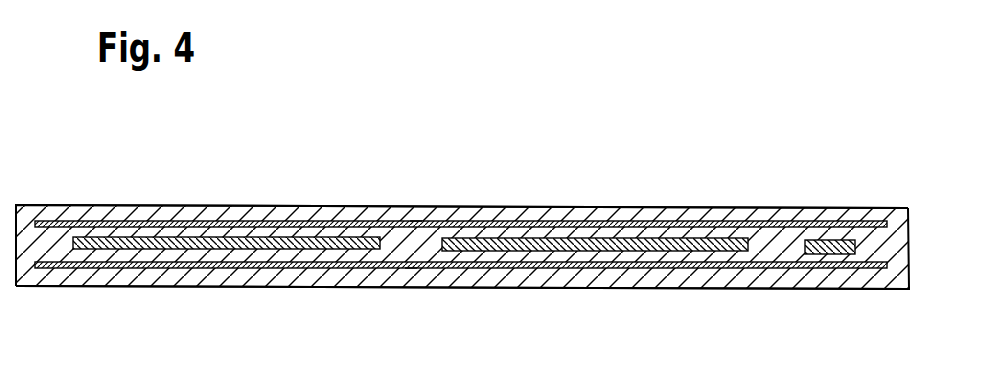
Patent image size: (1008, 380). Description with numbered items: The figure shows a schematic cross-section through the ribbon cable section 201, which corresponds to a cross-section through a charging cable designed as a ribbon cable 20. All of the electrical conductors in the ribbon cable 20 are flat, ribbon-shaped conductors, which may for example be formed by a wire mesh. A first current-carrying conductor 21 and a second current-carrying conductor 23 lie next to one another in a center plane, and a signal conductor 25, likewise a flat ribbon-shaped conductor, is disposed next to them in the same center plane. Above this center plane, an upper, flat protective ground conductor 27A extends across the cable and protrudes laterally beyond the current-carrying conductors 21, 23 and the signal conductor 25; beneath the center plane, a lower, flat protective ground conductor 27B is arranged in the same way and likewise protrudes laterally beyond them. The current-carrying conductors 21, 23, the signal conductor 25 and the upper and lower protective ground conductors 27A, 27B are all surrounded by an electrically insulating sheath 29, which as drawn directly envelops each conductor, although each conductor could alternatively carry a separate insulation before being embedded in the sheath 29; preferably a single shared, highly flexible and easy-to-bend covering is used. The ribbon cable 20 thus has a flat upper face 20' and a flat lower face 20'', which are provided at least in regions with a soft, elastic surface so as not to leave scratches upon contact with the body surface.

The ribbon cable section 201 is at (338, 160).
The ribbon cable 20 is at (462, 191).
The upper face 20' is at (462, 155).
The lower face 20'' is at (462, 327).
The electrically insulating sheath 29 is at (63, 205).
The first current-carrying conductor 21 is at (133, 250).
The second current-carrying conductor 23 is at (641, 252).
The signal conductor 25 is at (832, 254).
The upper protective ground conductor 27A is at (416, 227).
The lower protective ground conductor 27B is at (411, 262).